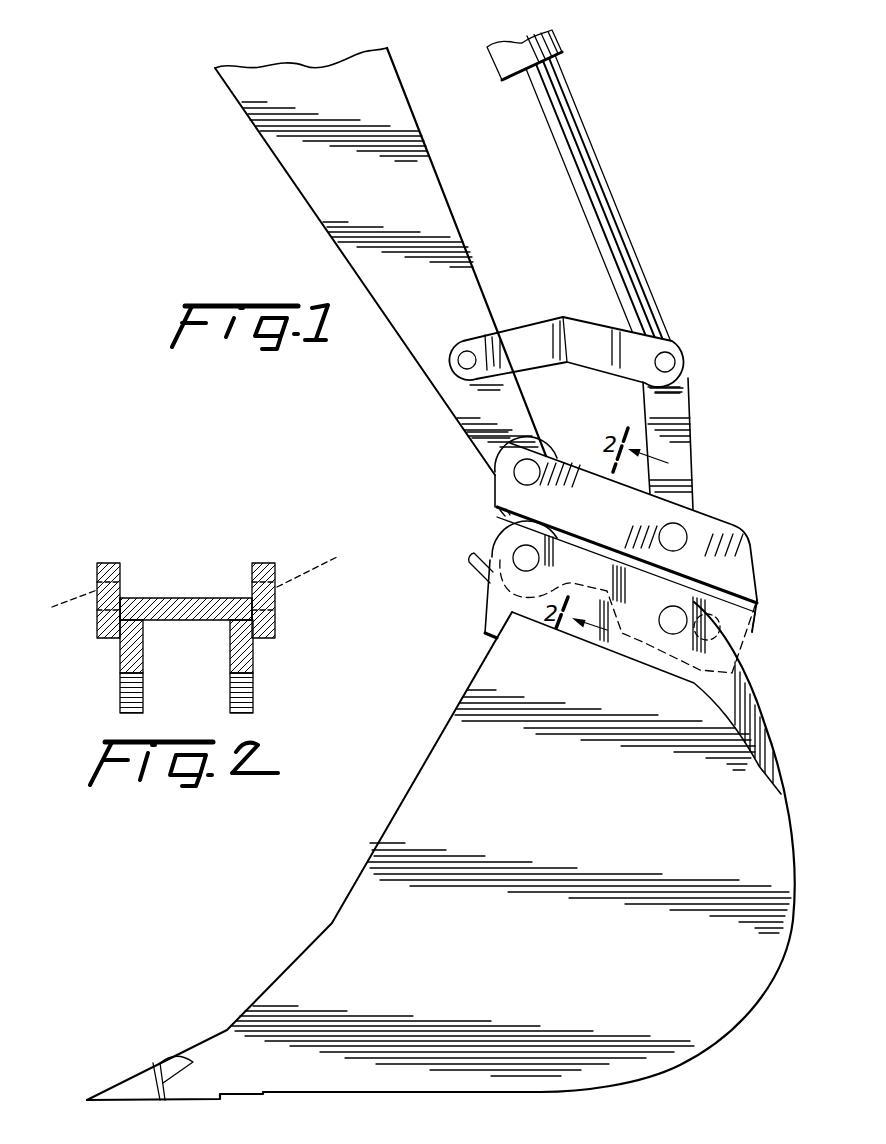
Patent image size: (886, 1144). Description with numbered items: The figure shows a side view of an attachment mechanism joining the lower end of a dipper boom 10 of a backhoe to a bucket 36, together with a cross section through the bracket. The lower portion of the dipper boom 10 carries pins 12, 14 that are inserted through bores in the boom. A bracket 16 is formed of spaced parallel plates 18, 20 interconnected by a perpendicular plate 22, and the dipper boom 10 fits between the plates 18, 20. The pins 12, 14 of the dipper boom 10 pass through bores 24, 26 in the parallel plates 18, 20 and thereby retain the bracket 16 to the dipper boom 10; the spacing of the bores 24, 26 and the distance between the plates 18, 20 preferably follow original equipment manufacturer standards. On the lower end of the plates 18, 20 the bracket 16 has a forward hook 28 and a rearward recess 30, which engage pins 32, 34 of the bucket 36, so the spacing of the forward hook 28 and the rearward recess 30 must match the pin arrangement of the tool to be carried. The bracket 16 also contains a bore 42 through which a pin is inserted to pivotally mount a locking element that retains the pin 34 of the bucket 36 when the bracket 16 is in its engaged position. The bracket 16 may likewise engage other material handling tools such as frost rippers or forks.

In FIG. 1, the dipper boom 10 is at (693, 366).
In FIG. 1, the pin 12 is at (523, 462).
In FIG. 1, the pin 14 is at (673, 528).
In FIG. 1, the bracket 16 is at (757, 570).
In FIG. 2, the bracket 16 is at (258, 688).
In FIG. 1, the parallel plate 18 is at (742, 538).
In FIG. 2, the parallel plate 18 is at (97, 622).
In FIG. 2, the parallel plate 20 is at (277, 617).
In FIG. 2, the perpendicular plate 22 is at (157, 598).
In FIG. 1, the bore 24 is at (517, 478).
In FIG. 2, the bore 24 is at (195, 582).
In FIG. 1, the bore 26 is at (688, 530).
In FIG. 1, the forward hook 28 is at (470, 558).
In FIG. 1, the rearward recess 30 is at (747, 693).
In FIG. 1, the pin 32 is at (519, 566).
In FIG. 1, the pin 34 is at (672, 622).
In FIG. 1, the bucket 36 is at (384, 830).
In FIG. 1, the bore 42 is at (755, 607).